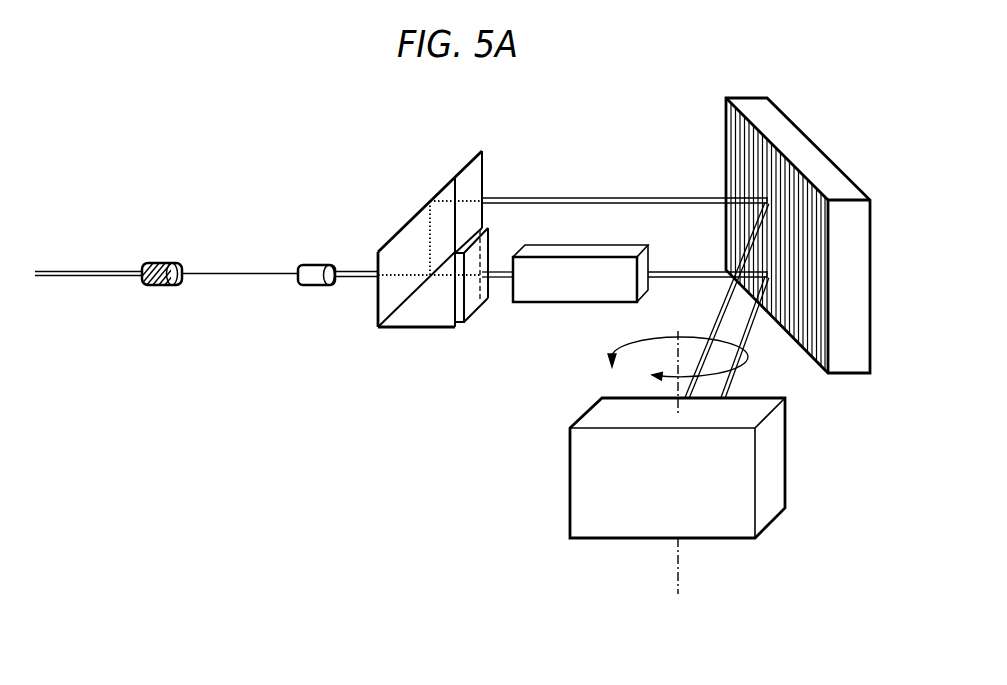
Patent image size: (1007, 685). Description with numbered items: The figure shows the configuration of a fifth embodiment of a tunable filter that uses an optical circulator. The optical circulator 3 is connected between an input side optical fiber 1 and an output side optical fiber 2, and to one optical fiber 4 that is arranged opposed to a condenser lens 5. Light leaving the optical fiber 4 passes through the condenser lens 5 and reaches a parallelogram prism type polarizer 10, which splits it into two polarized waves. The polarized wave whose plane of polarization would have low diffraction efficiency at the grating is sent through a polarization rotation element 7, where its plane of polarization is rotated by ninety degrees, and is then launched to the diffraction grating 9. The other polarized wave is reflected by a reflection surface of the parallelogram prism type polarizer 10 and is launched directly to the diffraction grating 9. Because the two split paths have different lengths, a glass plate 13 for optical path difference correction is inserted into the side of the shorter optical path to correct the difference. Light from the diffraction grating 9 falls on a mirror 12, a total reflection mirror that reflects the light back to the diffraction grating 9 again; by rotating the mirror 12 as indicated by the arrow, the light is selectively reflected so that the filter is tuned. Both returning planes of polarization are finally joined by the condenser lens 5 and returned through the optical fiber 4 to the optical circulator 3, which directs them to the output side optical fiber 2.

The input side optical fiber 1 is at (100, 270).
The output side optical fiber 2 is at (122, 279).
The optical circulator 3 is at (163, 263).
The optical fiber 4 is at (233, 274).
The condenser lens 5 is at (320, 264).
The polarization rotation element 7 is at (484, 305).
The diffraction grating 9 is at (833, 163).
The parallelogram prism type polarizer 10 is at (404, 232).
The mirror 12 is at (786, 456).
The glass plate for optical path difference correction 13 is at (572, 304).